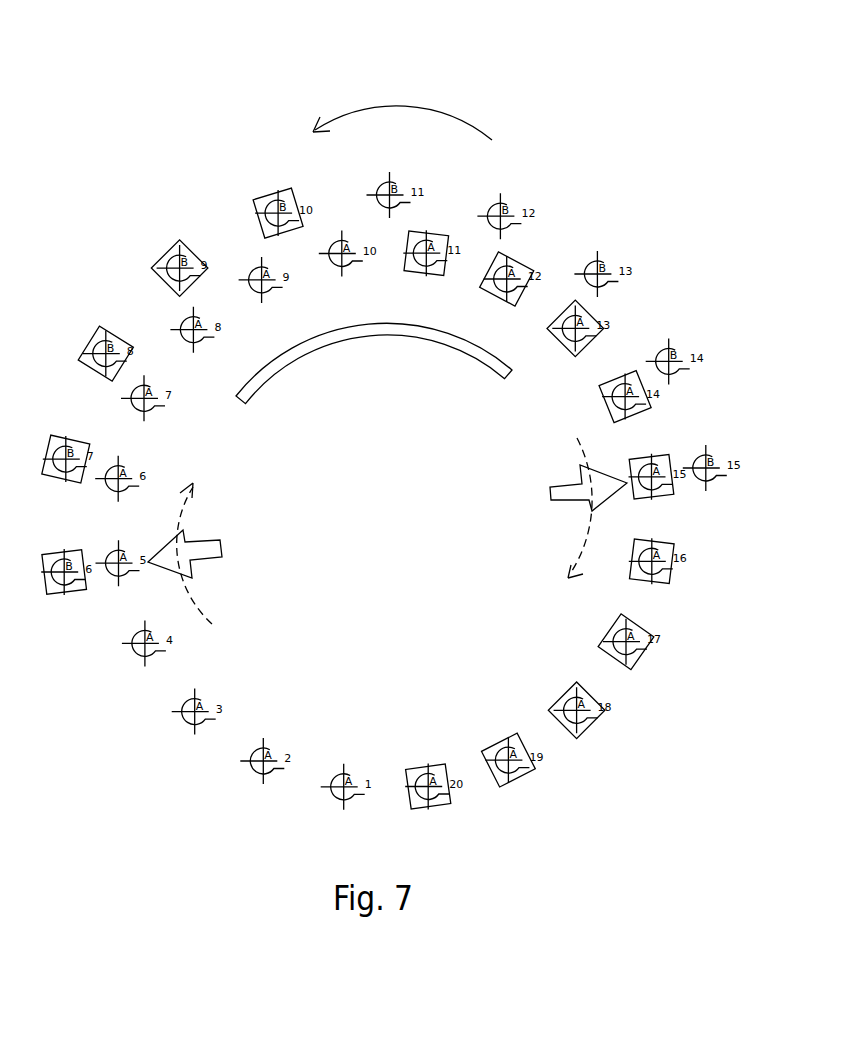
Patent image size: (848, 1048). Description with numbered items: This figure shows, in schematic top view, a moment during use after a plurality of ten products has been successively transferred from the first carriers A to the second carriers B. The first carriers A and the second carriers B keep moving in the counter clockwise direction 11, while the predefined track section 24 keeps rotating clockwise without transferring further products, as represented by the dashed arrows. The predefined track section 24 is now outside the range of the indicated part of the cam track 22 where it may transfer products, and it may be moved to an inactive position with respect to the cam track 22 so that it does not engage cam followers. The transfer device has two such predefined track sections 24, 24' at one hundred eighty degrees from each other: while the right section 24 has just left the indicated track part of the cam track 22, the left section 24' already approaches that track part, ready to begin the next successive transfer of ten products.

The counter clockwise direction 11 is at (407, 100).
The cam track 22 is at (433, 340).
The predefined track section 24 is at (545, 508).
The predefined track section 24' is at (235, 553).